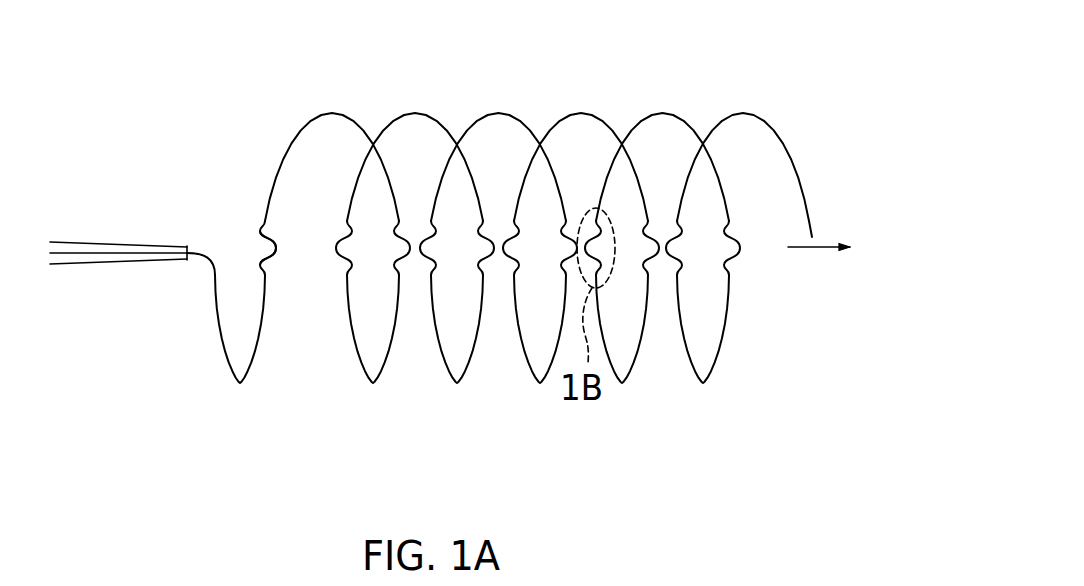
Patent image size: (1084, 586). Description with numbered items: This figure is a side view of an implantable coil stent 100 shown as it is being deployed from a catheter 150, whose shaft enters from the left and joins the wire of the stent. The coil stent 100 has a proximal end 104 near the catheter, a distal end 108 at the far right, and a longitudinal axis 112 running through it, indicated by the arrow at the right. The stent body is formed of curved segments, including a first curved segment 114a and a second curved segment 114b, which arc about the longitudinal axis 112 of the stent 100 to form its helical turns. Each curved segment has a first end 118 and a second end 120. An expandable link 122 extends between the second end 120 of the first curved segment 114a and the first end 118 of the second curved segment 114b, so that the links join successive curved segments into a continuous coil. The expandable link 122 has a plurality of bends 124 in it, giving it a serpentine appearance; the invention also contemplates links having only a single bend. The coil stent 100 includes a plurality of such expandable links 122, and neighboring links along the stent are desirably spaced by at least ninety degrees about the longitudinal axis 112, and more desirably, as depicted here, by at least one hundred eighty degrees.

The coil stent 100 is at (818, 95).
The proximal end 104 is at (277, 143).
The distal end 108 is at (825, 223).
The longitudinal axis 112 is at (805, 249).
The first curved segment 114a is at (240, 383).
The second curved segment 114b is at (307, 122).
The first end 118 is at (268, 208).
The second end 120 is at (260, 265).
The expandable link 122 is at (260, 233).
The bends 124 is at (276, 247).
The catheter 150 is at (87, 265).